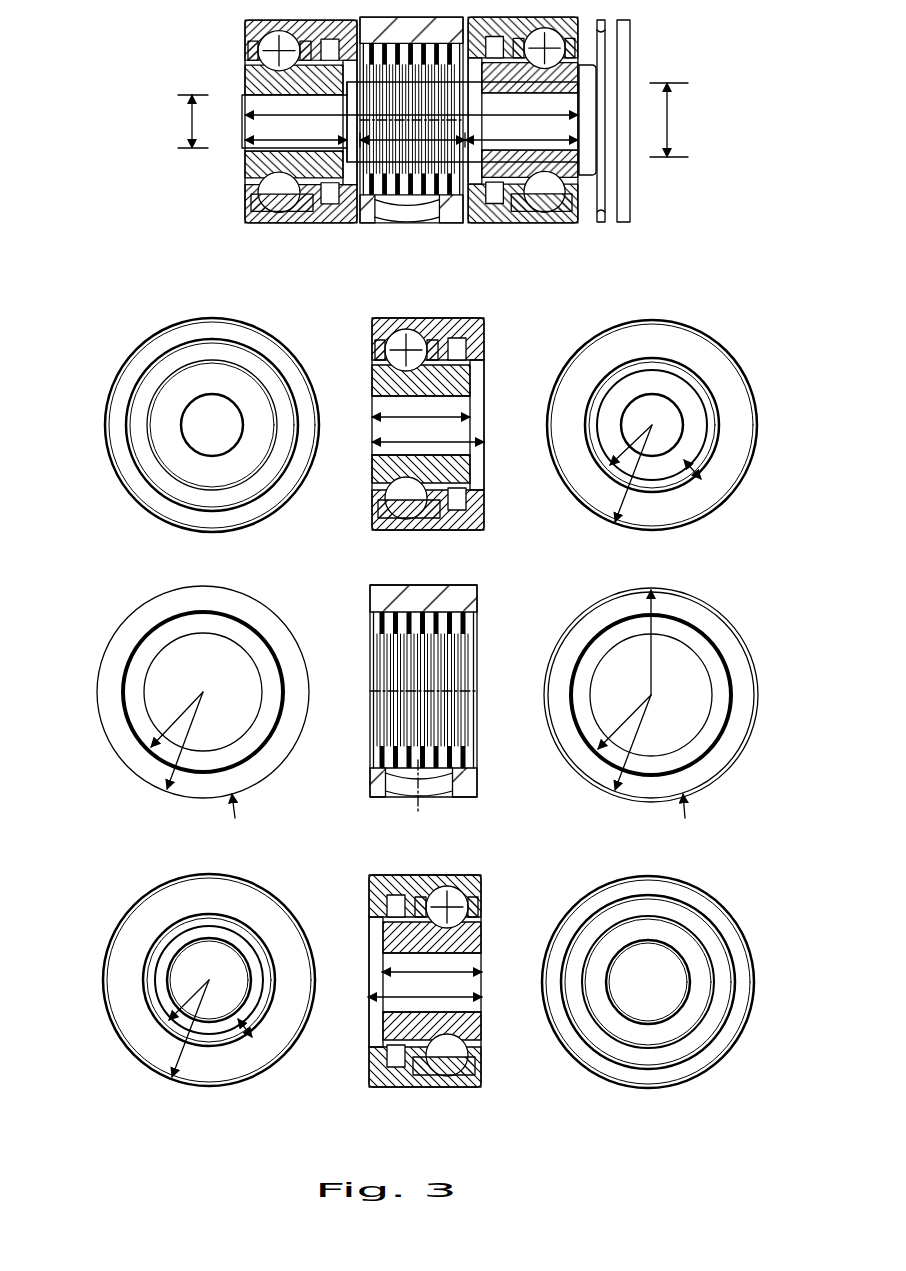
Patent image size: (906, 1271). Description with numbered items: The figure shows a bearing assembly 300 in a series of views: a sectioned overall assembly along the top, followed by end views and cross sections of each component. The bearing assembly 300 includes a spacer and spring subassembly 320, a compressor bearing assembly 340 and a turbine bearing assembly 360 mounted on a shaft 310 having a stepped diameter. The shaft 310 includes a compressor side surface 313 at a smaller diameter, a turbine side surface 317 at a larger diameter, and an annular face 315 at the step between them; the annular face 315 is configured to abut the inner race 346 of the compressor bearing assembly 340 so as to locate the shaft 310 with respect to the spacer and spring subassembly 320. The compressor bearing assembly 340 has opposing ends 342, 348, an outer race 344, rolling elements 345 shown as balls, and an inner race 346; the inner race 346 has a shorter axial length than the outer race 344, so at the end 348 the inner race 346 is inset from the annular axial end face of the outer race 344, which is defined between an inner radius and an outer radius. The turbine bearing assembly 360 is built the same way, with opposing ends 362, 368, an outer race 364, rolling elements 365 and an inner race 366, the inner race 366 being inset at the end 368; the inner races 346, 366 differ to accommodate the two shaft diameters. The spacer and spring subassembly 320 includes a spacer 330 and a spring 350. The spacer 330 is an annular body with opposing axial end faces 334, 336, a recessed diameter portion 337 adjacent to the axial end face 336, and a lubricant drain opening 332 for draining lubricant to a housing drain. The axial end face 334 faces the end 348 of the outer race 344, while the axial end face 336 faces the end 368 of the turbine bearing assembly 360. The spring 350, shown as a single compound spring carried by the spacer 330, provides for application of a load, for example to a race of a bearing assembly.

The bearing assembly 300 is at (422, 121).
The shaft 310 is at (457, 112).
The compressor side surface 313 is at (247, 142).
The annular face 315 is at (351, 97).
The turbine side surface 317 is at (577, 148).
The spacer and spring subassembly 320 is at (452, 229).
The spacer 330 is at (130, 632).
The lubricant drain opening 332 is at (443, 790).
The axial end face 334 is at (138, 787).
The axial end face 336 is at (510, 797).
The recessed diameter portion 337 is at (463, 592).
The compressor bearing assembly 340 is at (240, 230).
The end 342 is at (138, 512).
The outer race 344 is at (155, 347).
The rolling elements 345 is at (152, 378).
The inner race 346 is at (158, 424).
The end 348 is at (494, 528).
The spring 350 is at (133, 694).
The turbine bearing assembly 360 is at (585, 229).
The end 362 is at (488, 1092).
The outer race 364 is at (141, 928).
The rolling elements 365 is at (478, 904).
The inner race 366 is at (167, 979).
The end 368 is at (130, 1079).